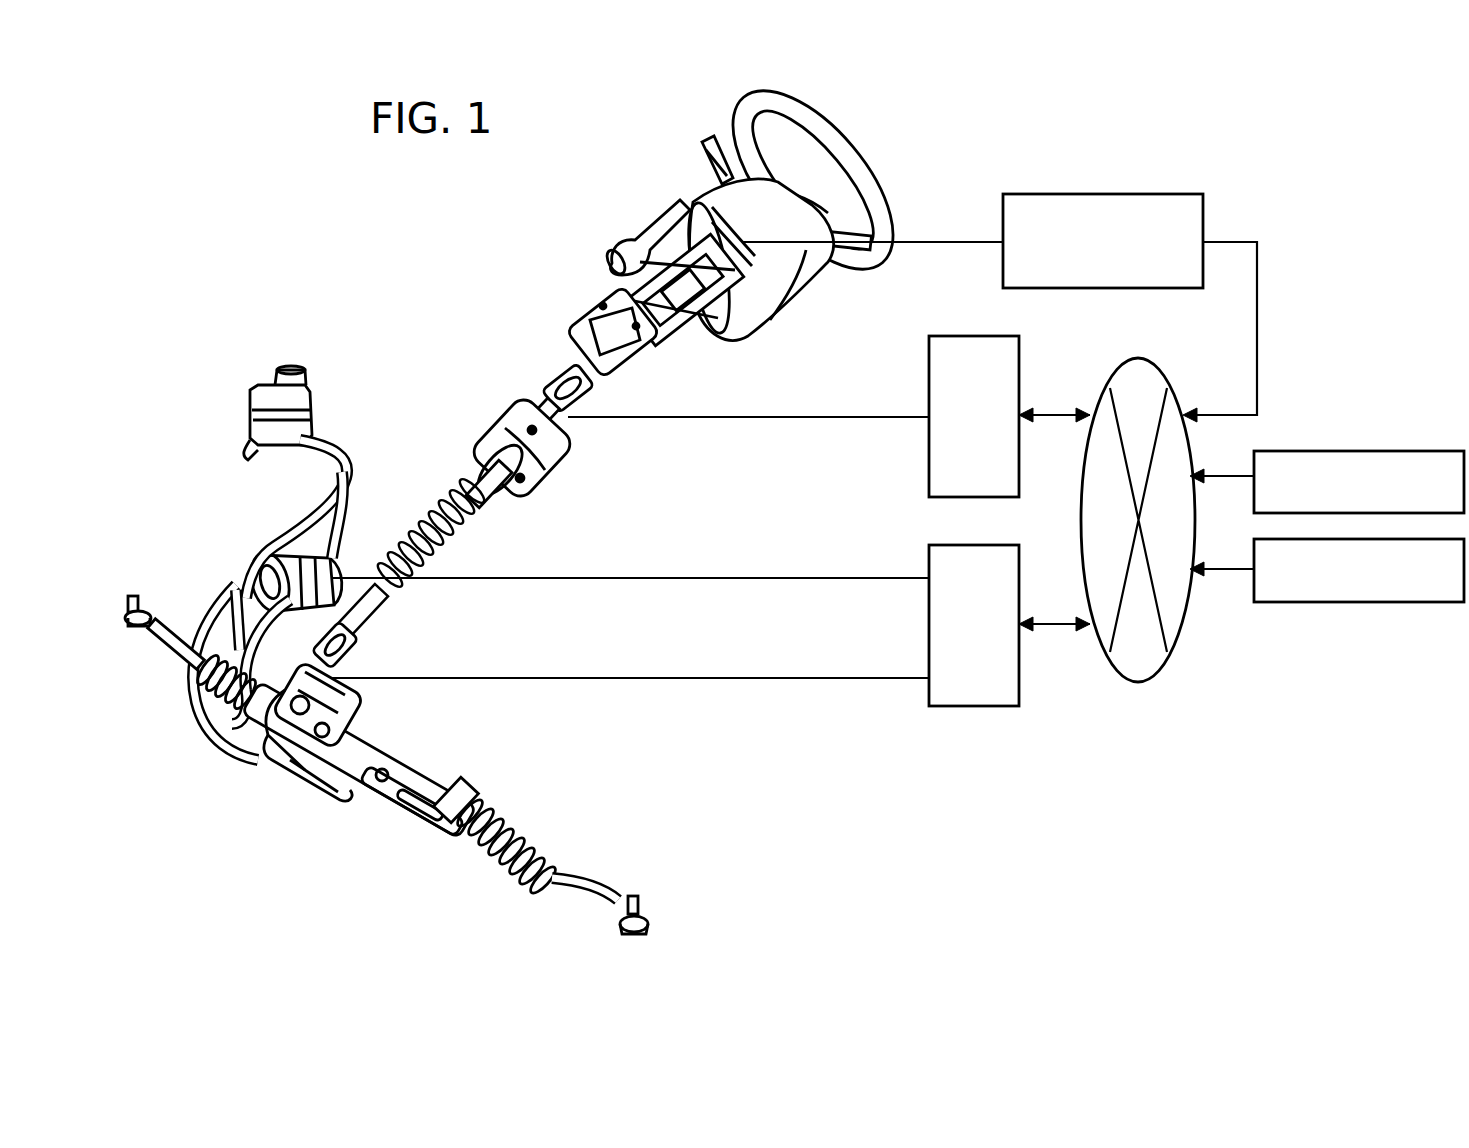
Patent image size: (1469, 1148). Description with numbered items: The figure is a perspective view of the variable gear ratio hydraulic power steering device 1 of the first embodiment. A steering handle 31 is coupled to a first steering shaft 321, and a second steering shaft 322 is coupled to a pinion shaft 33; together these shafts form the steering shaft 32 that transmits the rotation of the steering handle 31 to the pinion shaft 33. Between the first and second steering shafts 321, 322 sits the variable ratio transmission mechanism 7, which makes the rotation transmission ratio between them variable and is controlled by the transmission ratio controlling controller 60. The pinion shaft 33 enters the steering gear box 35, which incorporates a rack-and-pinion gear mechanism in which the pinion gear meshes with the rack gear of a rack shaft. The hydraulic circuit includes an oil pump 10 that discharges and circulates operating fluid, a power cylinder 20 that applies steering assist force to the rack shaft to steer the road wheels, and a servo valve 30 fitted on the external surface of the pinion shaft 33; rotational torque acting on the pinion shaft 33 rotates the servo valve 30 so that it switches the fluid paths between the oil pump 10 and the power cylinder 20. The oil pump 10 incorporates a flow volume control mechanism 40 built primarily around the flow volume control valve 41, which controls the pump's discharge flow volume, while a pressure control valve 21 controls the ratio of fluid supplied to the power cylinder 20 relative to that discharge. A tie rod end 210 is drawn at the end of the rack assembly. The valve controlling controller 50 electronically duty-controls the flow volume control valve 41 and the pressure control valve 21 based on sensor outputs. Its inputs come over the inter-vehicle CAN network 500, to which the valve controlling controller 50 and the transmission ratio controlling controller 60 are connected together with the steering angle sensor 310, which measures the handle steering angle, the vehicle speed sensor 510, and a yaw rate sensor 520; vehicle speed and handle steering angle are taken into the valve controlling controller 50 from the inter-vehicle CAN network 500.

The variable gear ratio hydraulic power steering device 1 is at (965, 178).
The variable ratio transmission mechanism 7 is at (532, 400).
The oil pump 10 is at (254, 548).
The power cylinder 20 is at (434, 785).
The pressure control valve 21 is at (332, 668).
The servo valve 30 is at (332, 706).
The steering handle 31 is at (829, 146).
The steering shaft 32 is at (491, 491).
The pinion shaft 33 is at (337, 664).
The steering gear box 35 is at (298, 782).
The flow volume control mechanism 40 is at (324, 560).
The flow volume control valve 41 is at (324, 563).
The valve controlling controller 50 is at (990, 706).
The transmission ratio controlling controller 60 is at (987, 337).
The tie rod end 210 is at (613, 897).
The steering angle sensor 310 is at (1205, 214).
The first steering shaft 321 is at (571, 370).
The second steering shaft 322 is at (486, 496).
The inter-vehicle CAN network 500 is at (1141, 661).
The vehicle speed sensor 510 is at (1336, 450).
The yaw rate sensor 520 is at (1346, 603).